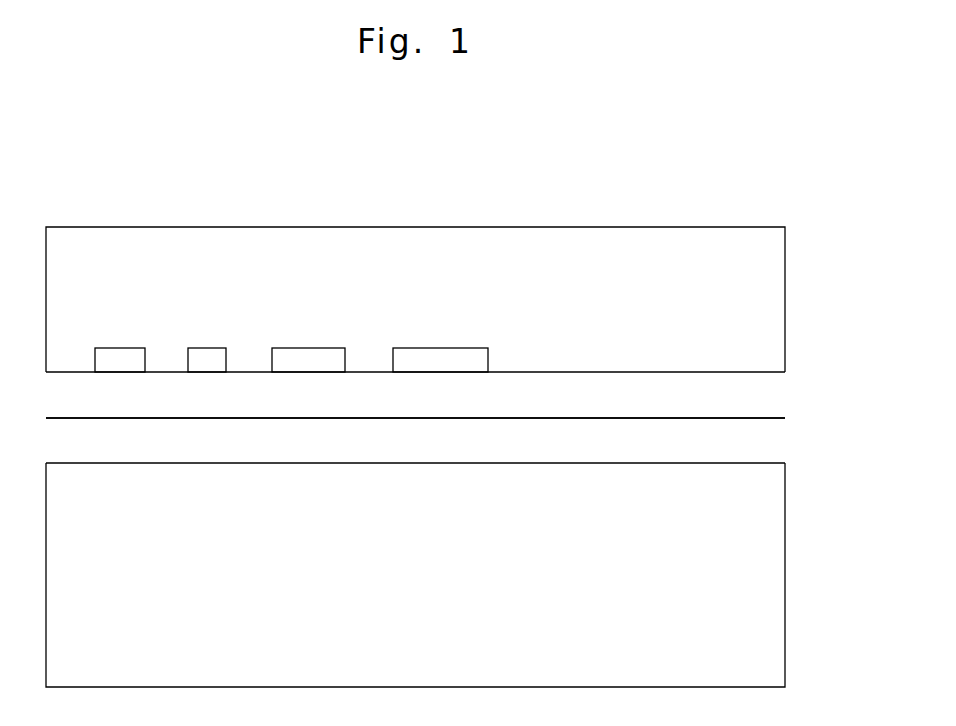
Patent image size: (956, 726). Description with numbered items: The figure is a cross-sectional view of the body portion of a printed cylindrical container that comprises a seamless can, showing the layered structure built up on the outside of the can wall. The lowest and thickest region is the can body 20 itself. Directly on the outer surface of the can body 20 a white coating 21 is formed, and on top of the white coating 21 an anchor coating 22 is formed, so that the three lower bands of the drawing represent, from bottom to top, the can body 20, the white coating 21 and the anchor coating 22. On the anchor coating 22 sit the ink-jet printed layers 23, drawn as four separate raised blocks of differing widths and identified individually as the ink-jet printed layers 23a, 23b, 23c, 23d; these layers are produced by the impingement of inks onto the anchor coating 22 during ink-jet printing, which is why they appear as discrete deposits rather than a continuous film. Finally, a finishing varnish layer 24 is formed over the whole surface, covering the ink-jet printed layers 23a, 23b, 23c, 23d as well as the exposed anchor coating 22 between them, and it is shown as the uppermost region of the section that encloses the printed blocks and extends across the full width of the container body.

The can body 20 is at (762, 521).
The white coating 21 is at (762, 447).
The anchor coating 22 is at (762, 398).
The ink-jet printed layers 23 is at (291, 245).
The ink-jet printed layer 23a is at (117, 356).
The ink-jet printed layer 23b is at (207, 356).
The ink-jet printed layer 23c is at (313, 356).
The ink-jet printed layer 23d is at (440, 275).
The finishing varnish layer 24 is at (762, 337).